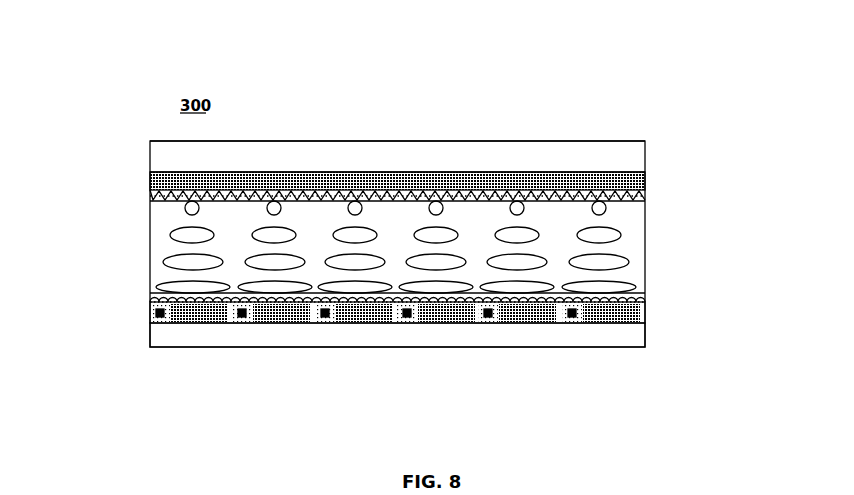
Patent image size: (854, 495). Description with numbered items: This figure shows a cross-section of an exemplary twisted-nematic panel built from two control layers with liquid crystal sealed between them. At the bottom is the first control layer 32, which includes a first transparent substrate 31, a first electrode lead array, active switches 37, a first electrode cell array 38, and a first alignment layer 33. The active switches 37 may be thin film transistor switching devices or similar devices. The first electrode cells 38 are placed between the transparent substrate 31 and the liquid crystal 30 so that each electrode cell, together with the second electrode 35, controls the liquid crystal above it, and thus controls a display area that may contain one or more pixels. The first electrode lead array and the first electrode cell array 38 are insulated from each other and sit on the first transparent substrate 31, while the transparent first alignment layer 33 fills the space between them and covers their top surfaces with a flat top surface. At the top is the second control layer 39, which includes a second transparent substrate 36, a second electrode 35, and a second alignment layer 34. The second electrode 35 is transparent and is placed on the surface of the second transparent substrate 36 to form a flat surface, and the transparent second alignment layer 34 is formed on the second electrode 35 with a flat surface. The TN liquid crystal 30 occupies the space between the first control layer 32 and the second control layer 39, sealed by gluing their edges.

The TN liquid crystal 30 is at (630, 261).
The first transparent substrate 31 is at (645, 347).
The first control layer 32 is at (645, 313).
The first alignment layer 33 is at (150, 292).
The second alignment layer 34 is at (150, 196).
The second electrode 35 is at (645, 180).
The second transparent substrate 36 is at (645, 147).
The active switches 37 is at (156, 313).
The first electrode cell array 38 is at (200, 310).
The second control layer 39 is at (604, 163).